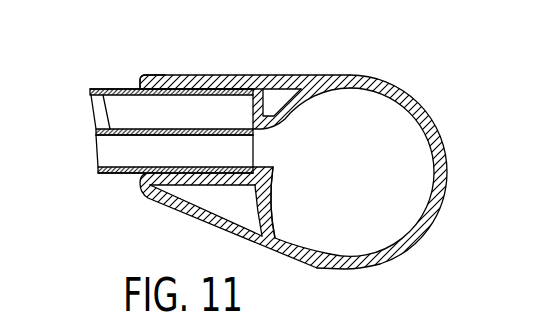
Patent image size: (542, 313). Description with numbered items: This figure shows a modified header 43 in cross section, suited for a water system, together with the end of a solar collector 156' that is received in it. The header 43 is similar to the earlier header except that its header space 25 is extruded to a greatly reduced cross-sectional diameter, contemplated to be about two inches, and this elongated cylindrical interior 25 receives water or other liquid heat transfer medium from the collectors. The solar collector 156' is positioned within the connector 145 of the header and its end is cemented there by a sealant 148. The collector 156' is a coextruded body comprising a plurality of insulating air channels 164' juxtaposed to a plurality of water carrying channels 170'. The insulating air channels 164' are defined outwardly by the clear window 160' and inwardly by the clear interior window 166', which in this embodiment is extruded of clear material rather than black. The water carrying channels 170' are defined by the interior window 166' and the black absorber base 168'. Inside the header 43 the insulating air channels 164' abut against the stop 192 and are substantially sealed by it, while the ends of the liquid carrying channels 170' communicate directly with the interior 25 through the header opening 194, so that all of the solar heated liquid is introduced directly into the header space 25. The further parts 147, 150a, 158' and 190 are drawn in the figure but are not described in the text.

The modified header 43 is at (403, 91).
The connector 145 is at (152, 74).
The pocket web 147 is at (285, 75).
The sealant 148 is at (224, 75).
The lower wall 150a is at (252, 222).
The solar collector 156' is at (108, 220).
The lower tube wall 158' is at (150, 200).
The clear window 160' is at (171, 73).
The insulating air channels 164' is at (143, 118).
The clear interior window 166' is at (158, 60).
The black absorber base 168' is at (185, 212).
The water carrying channels 170' is at (143, 162).
The inclined lower band 190 is at (199, 187).
The stop 192 is at (275, 147).
The header opening 194 is at (276, 153).
The header space 25 is at (317, 266).